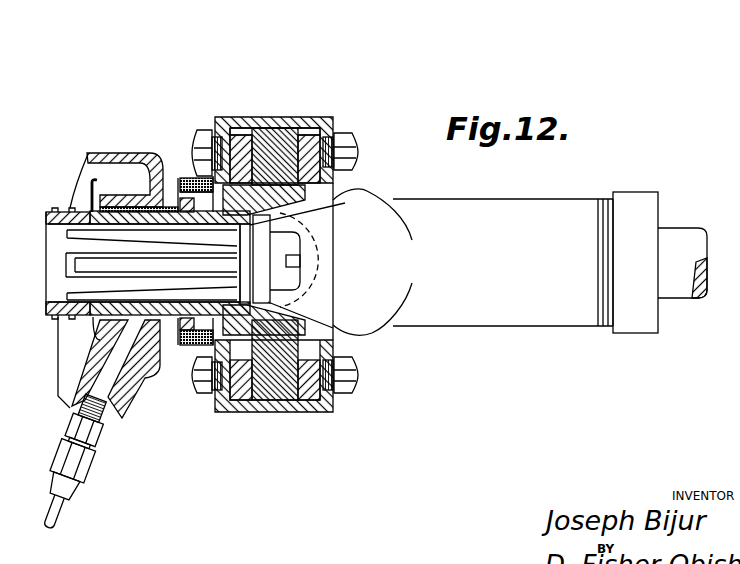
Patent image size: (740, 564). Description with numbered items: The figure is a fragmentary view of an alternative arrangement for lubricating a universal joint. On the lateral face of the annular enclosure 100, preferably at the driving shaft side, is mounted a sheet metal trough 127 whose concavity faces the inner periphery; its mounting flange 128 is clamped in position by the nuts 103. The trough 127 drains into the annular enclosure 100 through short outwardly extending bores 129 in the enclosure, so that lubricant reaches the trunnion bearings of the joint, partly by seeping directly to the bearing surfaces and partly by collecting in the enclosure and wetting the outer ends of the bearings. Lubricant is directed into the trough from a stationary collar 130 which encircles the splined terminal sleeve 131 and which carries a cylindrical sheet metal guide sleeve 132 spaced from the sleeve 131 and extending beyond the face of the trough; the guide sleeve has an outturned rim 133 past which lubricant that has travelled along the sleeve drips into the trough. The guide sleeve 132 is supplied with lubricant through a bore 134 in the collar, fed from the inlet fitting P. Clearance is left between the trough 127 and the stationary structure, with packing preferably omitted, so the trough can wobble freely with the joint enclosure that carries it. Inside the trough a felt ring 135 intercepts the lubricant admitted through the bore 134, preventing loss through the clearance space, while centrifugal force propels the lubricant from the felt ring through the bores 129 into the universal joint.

The annular enclosure 100 is at (288, 117).
The nuts 103 is at (206, 130).
The sheet metal trough 127 is at (178, 194).
The mounting flange 128 is at (241, 117).
The outwardly extending bores 129 is at (330, 217).
The stationary collar 130 is at (154, 152).
The splined terminal sleeve 131 is at (157, 212).
The cylindrical sheet metal guide sleeve 132 is at (168, 206).
The outturned rim 133 is at (184, 352).
The bore 134 is at (128, 384).
The felt ring 135 is at (203, 340).
The inlet fitting P is at (72, 463).